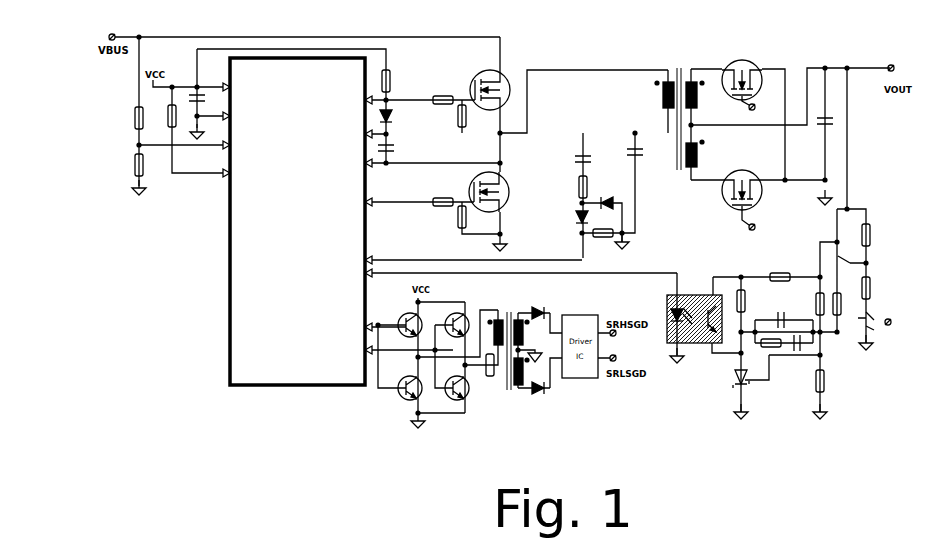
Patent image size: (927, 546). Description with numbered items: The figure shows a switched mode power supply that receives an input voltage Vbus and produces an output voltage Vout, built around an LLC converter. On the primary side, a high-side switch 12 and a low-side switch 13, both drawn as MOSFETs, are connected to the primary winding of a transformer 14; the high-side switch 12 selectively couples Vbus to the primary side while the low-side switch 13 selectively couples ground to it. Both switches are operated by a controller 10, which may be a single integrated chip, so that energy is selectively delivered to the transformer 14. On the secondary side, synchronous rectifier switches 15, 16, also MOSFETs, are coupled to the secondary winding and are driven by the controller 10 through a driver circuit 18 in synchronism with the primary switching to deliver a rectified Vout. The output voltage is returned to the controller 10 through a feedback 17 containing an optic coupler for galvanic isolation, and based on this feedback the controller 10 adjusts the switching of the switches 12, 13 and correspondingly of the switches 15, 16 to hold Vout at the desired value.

The controller 10 is at (232, 317).
The high-side switch 12 is at (506, 78).
The low-side switch 13 is at (513, 187).
The transformer 14 is at (677, 73).
The synchronous rectifier switch 15 is at (750, 63).
The synchronous rectifier switch 16 is at (742, 171).
The feedback 17 is at (687, 296).
The driver circuit 18 is at (535, 405).